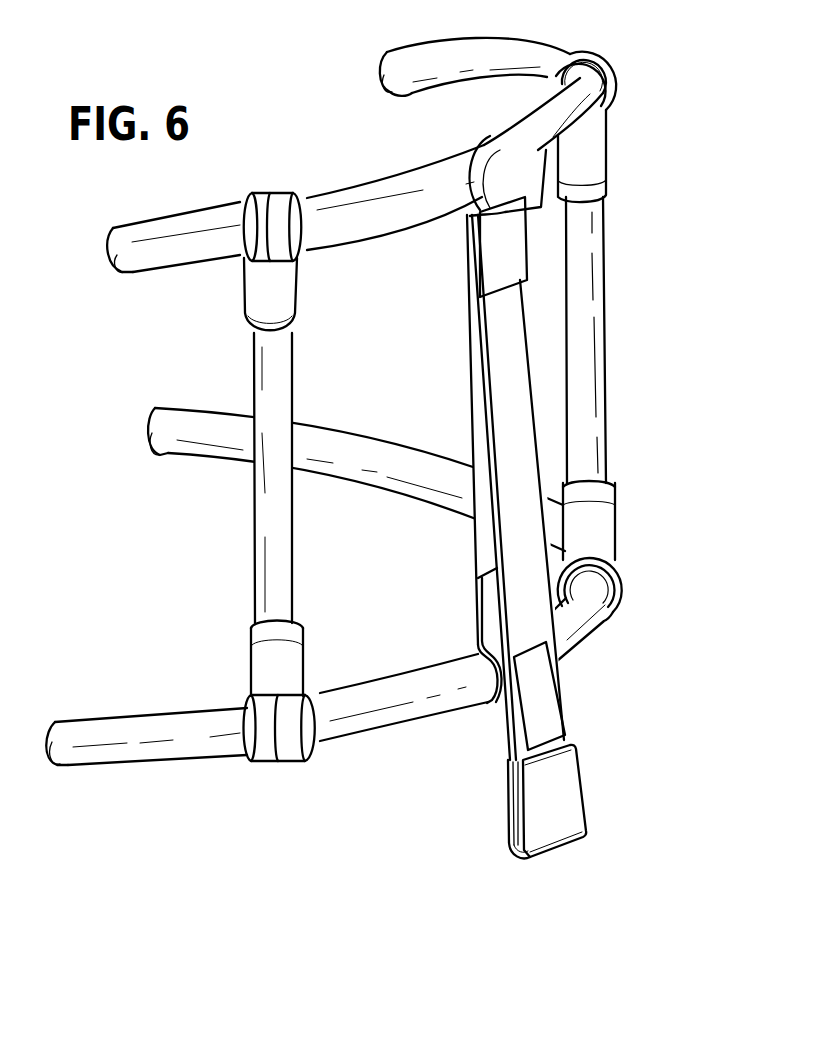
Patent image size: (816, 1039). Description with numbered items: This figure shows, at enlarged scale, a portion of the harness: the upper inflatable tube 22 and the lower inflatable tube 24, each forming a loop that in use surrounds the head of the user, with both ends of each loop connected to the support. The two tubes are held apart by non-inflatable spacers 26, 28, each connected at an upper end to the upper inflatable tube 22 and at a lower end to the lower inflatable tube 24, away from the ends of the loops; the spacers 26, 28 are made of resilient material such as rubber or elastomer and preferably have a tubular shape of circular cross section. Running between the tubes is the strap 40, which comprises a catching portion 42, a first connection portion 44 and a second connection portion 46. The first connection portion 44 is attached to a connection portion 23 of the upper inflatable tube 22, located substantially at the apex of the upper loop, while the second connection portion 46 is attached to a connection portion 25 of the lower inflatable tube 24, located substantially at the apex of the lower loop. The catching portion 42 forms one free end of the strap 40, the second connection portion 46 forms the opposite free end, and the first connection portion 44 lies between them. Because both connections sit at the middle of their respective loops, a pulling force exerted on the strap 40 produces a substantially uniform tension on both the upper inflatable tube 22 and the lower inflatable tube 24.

The upper inflatable tube 22 is at (170, 253).
The connection portion 23 is at (469, 177).
The lower inflatable tube 24 is at (195, 742).
The connection portion 25 is at (483, 682).
The spacer 26 is at (275, 517).
The spacer 28 is at (587, 275).
The strap 40 is at (584, 705).
The catching portion 42 is at (598, 840).
The first connection portion 44 is at (461, 135).
The second connection portion 46 is at (497, 714).